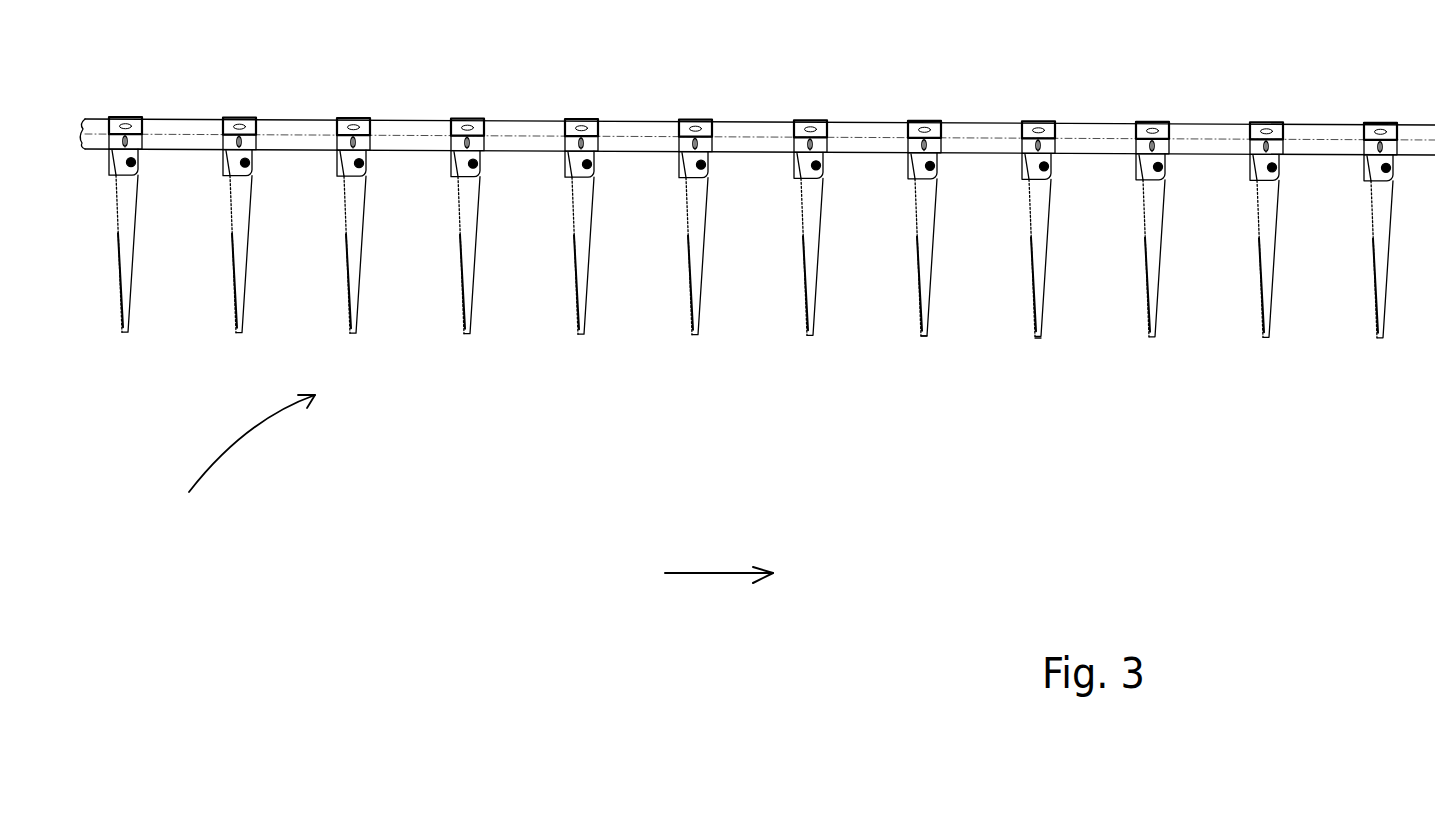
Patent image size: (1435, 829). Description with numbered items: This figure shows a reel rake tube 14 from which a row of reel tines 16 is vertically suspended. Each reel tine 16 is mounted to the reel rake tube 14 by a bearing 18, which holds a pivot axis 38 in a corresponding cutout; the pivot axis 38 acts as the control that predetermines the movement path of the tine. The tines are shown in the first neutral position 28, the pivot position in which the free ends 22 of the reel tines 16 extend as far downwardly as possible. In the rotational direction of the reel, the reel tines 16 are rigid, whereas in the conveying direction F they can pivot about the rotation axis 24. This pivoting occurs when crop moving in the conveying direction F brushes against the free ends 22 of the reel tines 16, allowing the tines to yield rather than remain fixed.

The reel rake tube 14 is at (747, 130).
The reel tine 16 is at (1270, 252).
The bearing 18 is at (822, 157).
The free ends 22 is at (925, 336).
The rotation axis 24 is at (592, 172).
The pivot axis 38 is at (478, 168).
The first neutral position 28 is at (240, 465).
The conveying direction F is at (730, 535).